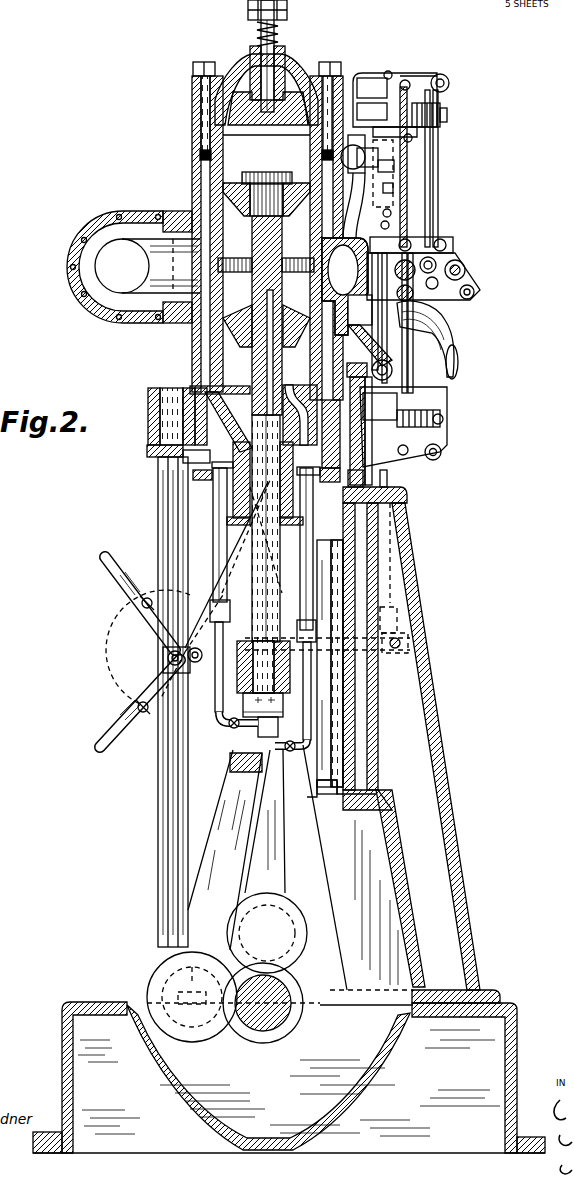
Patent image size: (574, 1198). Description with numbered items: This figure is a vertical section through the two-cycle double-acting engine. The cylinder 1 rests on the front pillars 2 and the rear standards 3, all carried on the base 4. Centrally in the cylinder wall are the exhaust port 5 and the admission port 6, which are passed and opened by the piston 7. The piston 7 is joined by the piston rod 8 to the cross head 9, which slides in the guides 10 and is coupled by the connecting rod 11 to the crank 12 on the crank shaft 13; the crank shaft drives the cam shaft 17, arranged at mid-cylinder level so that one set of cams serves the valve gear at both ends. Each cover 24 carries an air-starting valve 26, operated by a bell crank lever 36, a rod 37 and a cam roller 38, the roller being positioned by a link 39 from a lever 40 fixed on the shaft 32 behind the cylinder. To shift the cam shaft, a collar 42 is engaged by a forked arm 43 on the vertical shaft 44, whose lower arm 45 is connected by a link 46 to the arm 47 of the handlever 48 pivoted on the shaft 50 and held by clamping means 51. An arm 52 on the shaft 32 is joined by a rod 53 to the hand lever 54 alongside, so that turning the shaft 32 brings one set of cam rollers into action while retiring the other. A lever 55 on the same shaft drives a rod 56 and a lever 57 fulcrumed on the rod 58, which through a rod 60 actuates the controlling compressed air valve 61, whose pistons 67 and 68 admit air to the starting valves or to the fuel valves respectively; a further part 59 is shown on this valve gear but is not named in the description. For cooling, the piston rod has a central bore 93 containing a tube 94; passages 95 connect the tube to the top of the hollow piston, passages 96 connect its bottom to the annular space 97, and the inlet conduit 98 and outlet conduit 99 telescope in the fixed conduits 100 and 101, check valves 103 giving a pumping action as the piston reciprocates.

The cylinder 1 is at (192, 343).
The pillar 2 is at (158, 866).
The standard 3 is at (436, 720).
The base 4 is at (289, 1071).
The exhaust port 5 is at (200, 266).
The admission port 6 is at (345, 286).
The piston 7 is at (296, 361).
The piston rod 8 is at (256, 576).
The cross head 9 is at (330, 663).
The guides 10 is at (335, 793).
The connecting rod 11 is at (236, 850).
The crank 12 is at (185, 1052).
The crank shaft 13 is at (273, 1043).
The cam shaft 17 is at (342, 282).
The cover 24 is at (250, 72).
The air-starting valve 26 is at (377, 265).
The shaft 32 is at (458, 267).
The bell crank lever 36 is at (445, 89).
The rod 37 is at (407, 393).
The cam roller 38 is at (431, 311).
The link 39 is at (425, 243).
The lever 40 is at (440, 281).
The collar 42 is at (410, 258).
The forked arm 43 is at (405, 278).
The vertical shaft 44 is at (395, 582).
The arm 45 is at (408, 641).
The link 46 is at (387, 653).
The arm 47 is at (195, 657).
The handlever 48 is at (132, 584).
The shaft 50 is at (200, 669).
The clamping means 51 is at (142, 604).
The arm 52 is at (445, 250).
The rod 53 is at (213, 612).
The hand lever 54 is at (130, 722).
The lever 55 is at (474, 291).
The rod 56 is at (438, 200).
The lever 57 is at (408, 93).
The rod 58 is at (435, 122).
The slide 59 is at (395, 168).
The rod 60 is at (400, 102).
The controlling compressed air valve 61 is at (390, 194).
The piston 67 is at (398, 152).
The piston 68 is at (393, 185).
The central bore 93 is at (274, 371).
The tube 94 is at (273, 295).
The passages 95 is at (270, 232).
The passages 96 is at (245, 312).
The annular space 97 is at (253, 360).
The inlet conduit 98 is at (217, 707).
The outlet conduit 99 is at (283, 710).
The conduit 100 is at (220, 550).
The conduit 101 is at (312, 538).
The check valves 103 is at (231, 728).